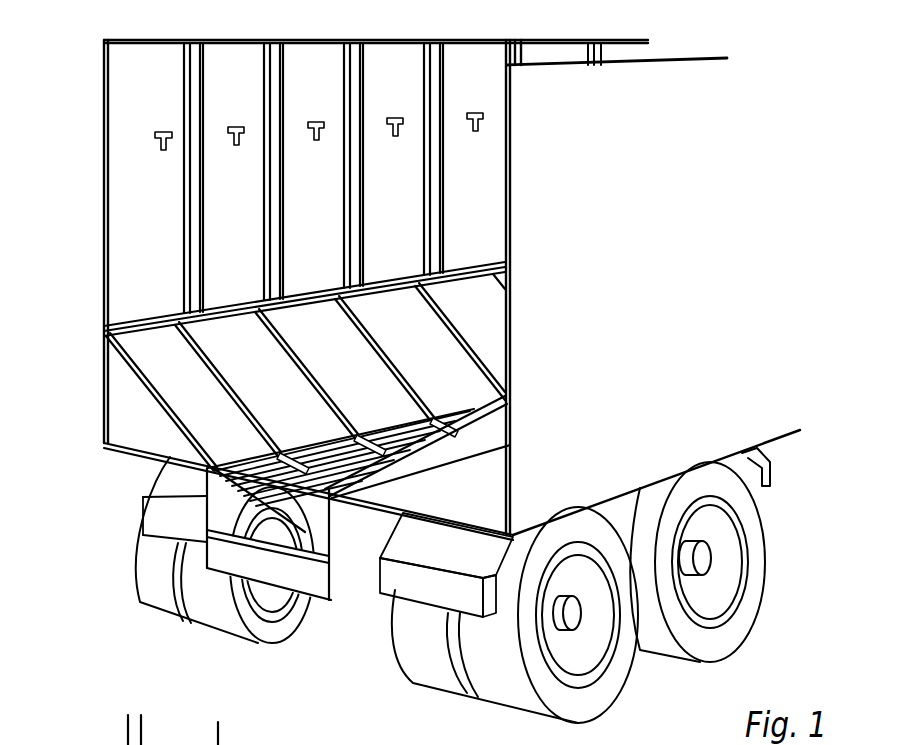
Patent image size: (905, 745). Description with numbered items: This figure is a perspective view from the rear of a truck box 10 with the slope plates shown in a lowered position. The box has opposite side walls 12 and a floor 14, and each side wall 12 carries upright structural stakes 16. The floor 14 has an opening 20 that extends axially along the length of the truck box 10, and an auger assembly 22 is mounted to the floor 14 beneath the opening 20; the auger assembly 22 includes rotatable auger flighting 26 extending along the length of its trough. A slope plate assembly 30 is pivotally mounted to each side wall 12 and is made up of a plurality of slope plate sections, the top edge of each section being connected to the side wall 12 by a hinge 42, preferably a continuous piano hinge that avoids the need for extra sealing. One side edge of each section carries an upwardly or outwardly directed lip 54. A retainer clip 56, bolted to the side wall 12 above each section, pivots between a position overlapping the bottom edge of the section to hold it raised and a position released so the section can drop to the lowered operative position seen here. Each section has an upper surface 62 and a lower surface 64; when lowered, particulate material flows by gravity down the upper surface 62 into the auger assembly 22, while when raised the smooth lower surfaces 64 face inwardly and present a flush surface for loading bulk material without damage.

The truck box 10 is at (99, 37).
The side wall 12 is at (104, 200).
The floor 14 is at (165, 445).
The upright structural stake 16 is at (184, 192).
The opening 20 is at (163, 499).
The auger assembly 22 is at (133, 520).
The auger flighting 26 is at (290, 586).
The slope plate assembly 30 is at (410, 310).
The hinge 42 is at (122, 329).
The lip 54 is at (165, 467).
The retainer clip 56 is at (230, 131).
The upper surface 62 is at (305, 372).
The lower surface 64 is at (468, 443).